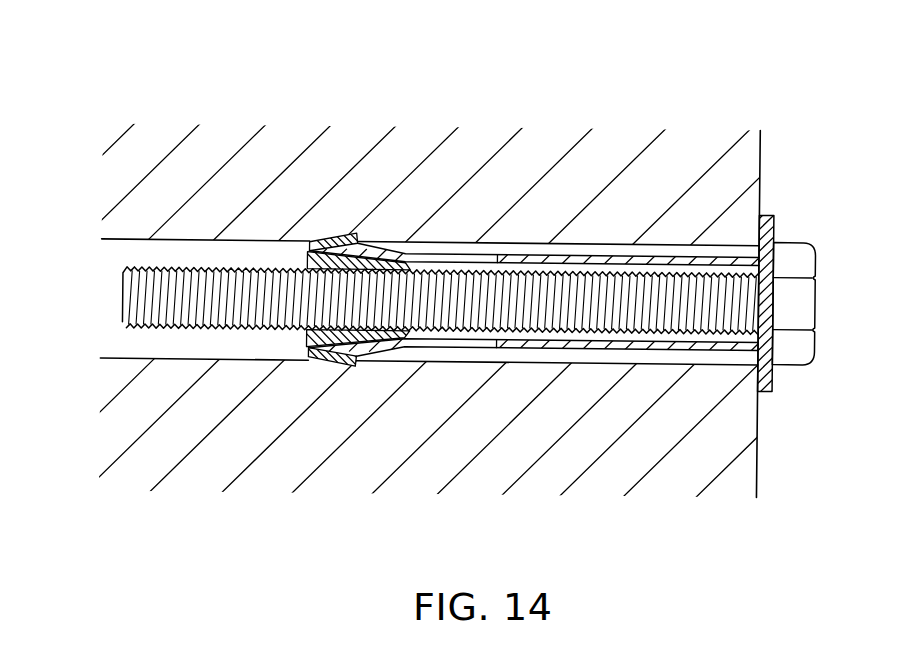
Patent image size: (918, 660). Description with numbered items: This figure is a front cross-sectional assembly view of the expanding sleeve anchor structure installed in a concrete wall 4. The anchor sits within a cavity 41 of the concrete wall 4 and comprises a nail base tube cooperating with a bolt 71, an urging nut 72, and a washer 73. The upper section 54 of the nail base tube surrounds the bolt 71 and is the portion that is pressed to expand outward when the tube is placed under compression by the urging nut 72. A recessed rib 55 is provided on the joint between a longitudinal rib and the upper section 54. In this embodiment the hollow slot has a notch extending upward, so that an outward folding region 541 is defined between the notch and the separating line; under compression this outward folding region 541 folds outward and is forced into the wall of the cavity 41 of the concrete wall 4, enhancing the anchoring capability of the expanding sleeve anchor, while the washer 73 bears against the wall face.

The concrete wall 4 is at (548, 138).
The cavity 41 is at (101, 341).
The upper section 54 is at (389, 352).
The outward folding region 541 is at (340, 236).
The recessed rib 55 is at (436, 257).
The bolt 71 is at (170, 268).
The urging nut 72 is at (308, 250).
The washer 73 is at (770, 218).